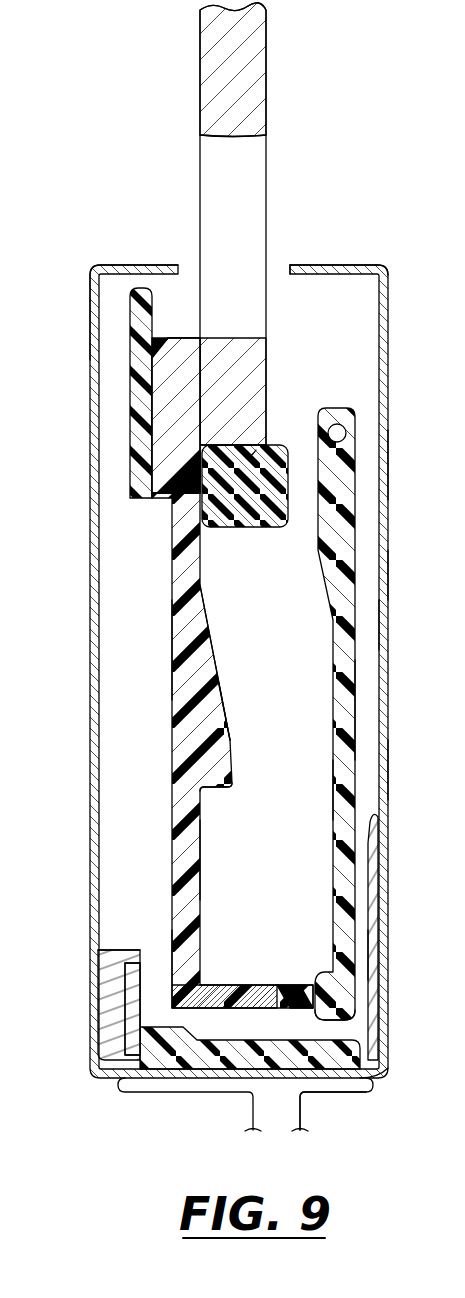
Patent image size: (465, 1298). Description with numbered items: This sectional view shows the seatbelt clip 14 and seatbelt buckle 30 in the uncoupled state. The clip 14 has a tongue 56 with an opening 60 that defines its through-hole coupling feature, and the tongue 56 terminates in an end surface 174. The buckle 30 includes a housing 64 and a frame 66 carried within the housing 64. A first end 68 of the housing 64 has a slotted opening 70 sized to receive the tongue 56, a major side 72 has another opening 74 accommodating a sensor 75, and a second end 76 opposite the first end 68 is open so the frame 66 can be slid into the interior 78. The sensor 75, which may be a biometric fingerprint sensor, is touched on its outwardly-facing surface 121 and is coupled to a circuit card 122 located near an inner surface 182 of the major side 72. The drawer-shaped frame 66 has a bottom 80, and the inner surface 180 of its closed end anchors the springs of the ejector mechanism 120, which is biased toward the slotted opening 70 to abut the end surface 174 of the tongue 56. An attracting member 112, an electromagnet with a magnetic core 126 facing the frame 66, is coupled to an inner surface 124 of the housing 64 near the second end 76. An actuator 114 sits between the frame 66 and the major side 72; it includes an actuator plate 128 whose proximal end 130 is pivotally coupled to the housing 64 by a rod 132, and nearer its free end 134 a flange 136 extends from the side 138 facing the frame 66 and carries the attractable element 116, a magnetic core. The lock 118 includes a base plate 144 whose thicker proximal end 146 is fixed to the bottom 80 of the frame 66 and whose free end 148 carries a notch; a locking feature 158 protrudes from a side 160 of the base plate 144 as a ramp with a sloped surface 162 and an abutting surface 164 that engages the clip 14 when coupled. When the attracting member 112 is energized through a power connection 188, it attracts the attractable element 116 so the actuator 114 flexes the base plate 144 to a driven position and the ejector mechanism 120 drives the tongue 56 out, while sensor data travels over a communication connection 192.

The clip 14 is at (276, 224).
The tongue 56 is at (245, 93).
The opening 60 is at (248, 138).
The buckle 30 is at (89, 269).
The housing 64 is at (87, 331).
The frame 66 is at (130, 379).
The first end 68 is at (338, 268).
The slotted opening 70 is at (292, 268).
The major side 72 is at (388, 470).
The opening 74 is at (388, 580).
The sensor 75 is at (380, 630).
The second end 76 is at (344, 1078).
The interior 78 is at (318, 329).
The bottom 80 is at (152, 300).
The attracting member 112 is at (112, 938).
The actuator 114 is at (357, 678).
The attractable element 116 is at (205, 995).
The lock 118 is at (172, 654).
The ejector mechanism 120 is at (257, 495).
The outwardly-facing surface 121 is at (388, 775).
The circuit card 122 is at (372, 955).
The inner surface 124 is at (96, 969).
The magnetic core 126 is at (133, 975).
The actuator plate 128 is at (345, 726).
The proximal end 130 is at (366, 691).
The rod 132 is at (335, 424).
The free end 134 is at (340, 1008).
The flange 136 is at (312, 1000).
The side 138 is at (338, 790).
The base plate 144 is at (177, 657).
The proximal end 146 is at (180, 365).
The free end 148 is at (185, 950).
The locking feature 158 is at (218, 658).
The side 160 is at (203, 855).
The sloped surface 162 is at (222, 704).
The abutting surface 164 is at (215, 795).
The end surface 174 is at (262, 463).
The inner surface 180 is at (255, 1050).
The inner surface 182 is at (409, 937).
The power connection 188 is at (170, 1093).
The communication connection 192 is at (320, 1093).